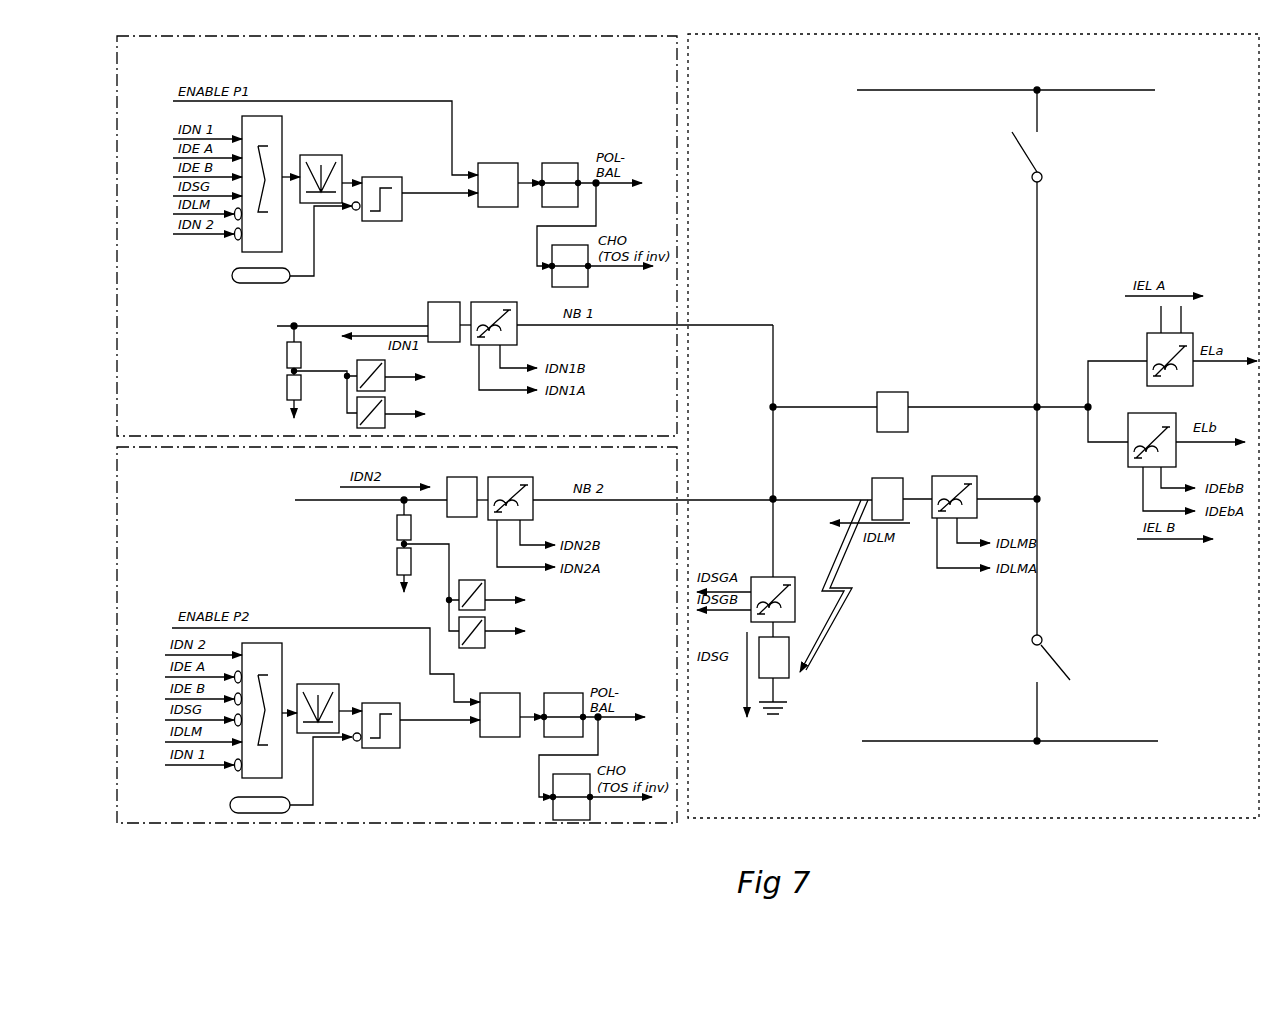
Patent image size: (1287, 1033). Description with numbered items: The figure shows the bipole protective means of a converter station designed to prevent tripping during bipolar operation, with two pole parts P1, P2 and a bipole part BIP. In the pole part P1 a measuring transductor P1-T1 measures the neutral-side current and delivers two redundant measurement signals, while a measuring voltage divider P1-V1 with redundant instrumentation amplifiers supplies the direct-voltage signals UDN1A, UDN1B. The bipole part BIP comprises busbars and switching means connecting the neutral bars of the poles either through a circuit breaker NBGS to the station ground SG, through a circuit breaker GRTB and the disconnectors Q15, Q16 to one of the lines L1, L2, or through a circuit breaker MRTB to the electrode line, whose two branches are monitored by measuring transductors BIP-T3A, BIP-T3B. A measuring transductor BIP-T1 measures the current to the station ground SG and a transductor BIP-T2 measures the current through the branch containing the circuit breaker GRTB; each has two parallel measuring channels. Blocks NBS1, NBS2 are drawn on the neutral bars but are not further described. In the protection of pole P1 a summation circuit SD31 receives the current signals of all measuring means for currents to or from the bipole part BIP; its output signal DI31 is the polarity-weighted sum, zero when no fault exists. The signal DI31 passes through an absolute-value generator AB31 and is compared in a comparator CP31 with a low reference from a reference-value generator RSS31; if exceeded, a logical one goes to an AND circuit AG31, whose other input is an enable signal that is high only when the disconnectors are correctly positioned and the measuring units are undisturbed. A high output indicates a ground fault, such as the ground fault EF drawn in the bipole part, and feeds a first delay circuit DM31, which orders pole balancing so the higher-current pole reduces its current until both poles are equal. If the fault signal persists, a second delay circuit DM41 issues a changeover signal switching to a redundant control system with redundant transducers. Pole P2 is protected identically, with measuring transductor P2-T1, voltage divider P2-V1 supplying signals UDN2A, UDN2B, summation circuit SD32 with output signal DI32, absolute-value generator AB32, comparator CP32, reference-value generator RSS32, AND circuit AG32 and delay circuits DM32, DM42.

The pole part P1 is at (397, 236).
The pole part P2 is at (397, 635).
The bipole part BIP is at (973, 426).
The summation circuit SD31 is at (232, 255).
The output signal DI31 is at (289, 176).
The absolute-value generator AB31 is at (311, 164).
The comparator CP31 is at (375, 177).
The reference-value generator RSS31 is at (240, 284).
The AND circuit AG31 is at (501, 163).
The first delay circuit DM31 is at (562, 163).
The second delay circuit DM41 is at (590, 284).
The neutral bus sensor NBS1 is at (444, 313).
The measuring transductor P1-T1 is at (494, 315).
The measuring voltage divider P1-V1 is at (273, 374).
The measurement signal UDN1A is at (394, 375).
The measurement signal UDN1B is at (394, 412).
The neutral bus sensor NBS2 is at (463, 488).
The current transformer P2-T1 is at (510, 489).
The voltage divider P2-V1 is at (413, 555).
The voltage converter A UDN2A is at (496, 595).
The voltage converter B UDN2B is at (496, 630).
The summing/selection device SD32 is at (272, 661).
The digital input signal DI32 is at (287, 722).
The amplitude/absolute value block AB32 is at (327, 692).
The comparator CP32 is at (392, 750).
The reference setting source RSS32 is at (232, 808).
The AND gate AG32 is at (500, 693).
The delay module DM32 is at (565, 693).
The delay module DM42 is at (549, 811).
The line L1 is at (1006, 74).
The line L2 is at (1010, 757).
The disconnector Q15 is at (1032, 136).
The disconnector Q16 is at (1046, 688).
The circuit breaker MRTB is at (894, 402).
The circuit breaker GRTB is at (886, 487).
The measuring transductor BIP-T2 is at (953, 485).
The measuring transductor BIP-T3A is at (1166, 356).
The measuring transductor BIP-T3B is at (1151, 438).
The measuring transductor BIP-T1 is at (795, 599).
The circuit breaker NBGS is at (793, 655).
The station ground SG is at (786, 697).
The ground fault EF is at (843, 617).